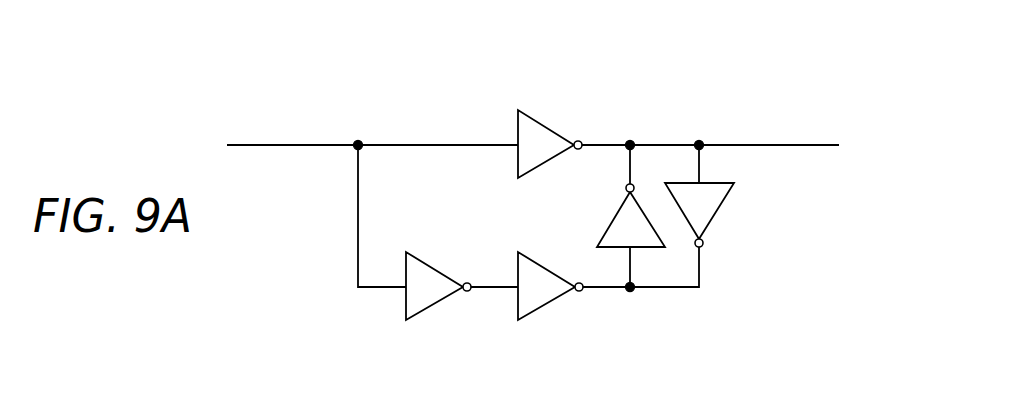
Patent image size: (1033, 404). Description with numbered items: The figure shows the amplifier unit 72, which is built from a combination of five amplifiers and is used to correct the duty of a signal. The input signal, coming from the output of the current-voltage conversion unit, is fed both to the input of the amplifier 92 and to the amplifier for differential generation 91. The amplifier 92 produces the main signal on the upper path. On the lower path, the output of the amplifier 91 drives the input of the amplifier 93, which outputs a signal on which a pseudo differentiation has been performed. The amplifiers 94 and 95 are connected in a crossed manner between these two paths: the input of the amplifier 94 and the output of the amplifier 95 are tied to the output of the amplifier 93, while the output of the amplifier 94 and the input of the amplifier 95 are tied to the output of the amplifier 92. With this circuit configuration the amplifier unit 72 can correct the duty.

The amplifier unit 72 is at (656, 78).
The amplifier for differential generation 91 is at (436, 306).
The amplifier 92 is at (556, 125).
The amplifier 93 is at (548, 306).
The amplifier 94 is at (612, 212).
The amplifier 95 is at (720, 213).